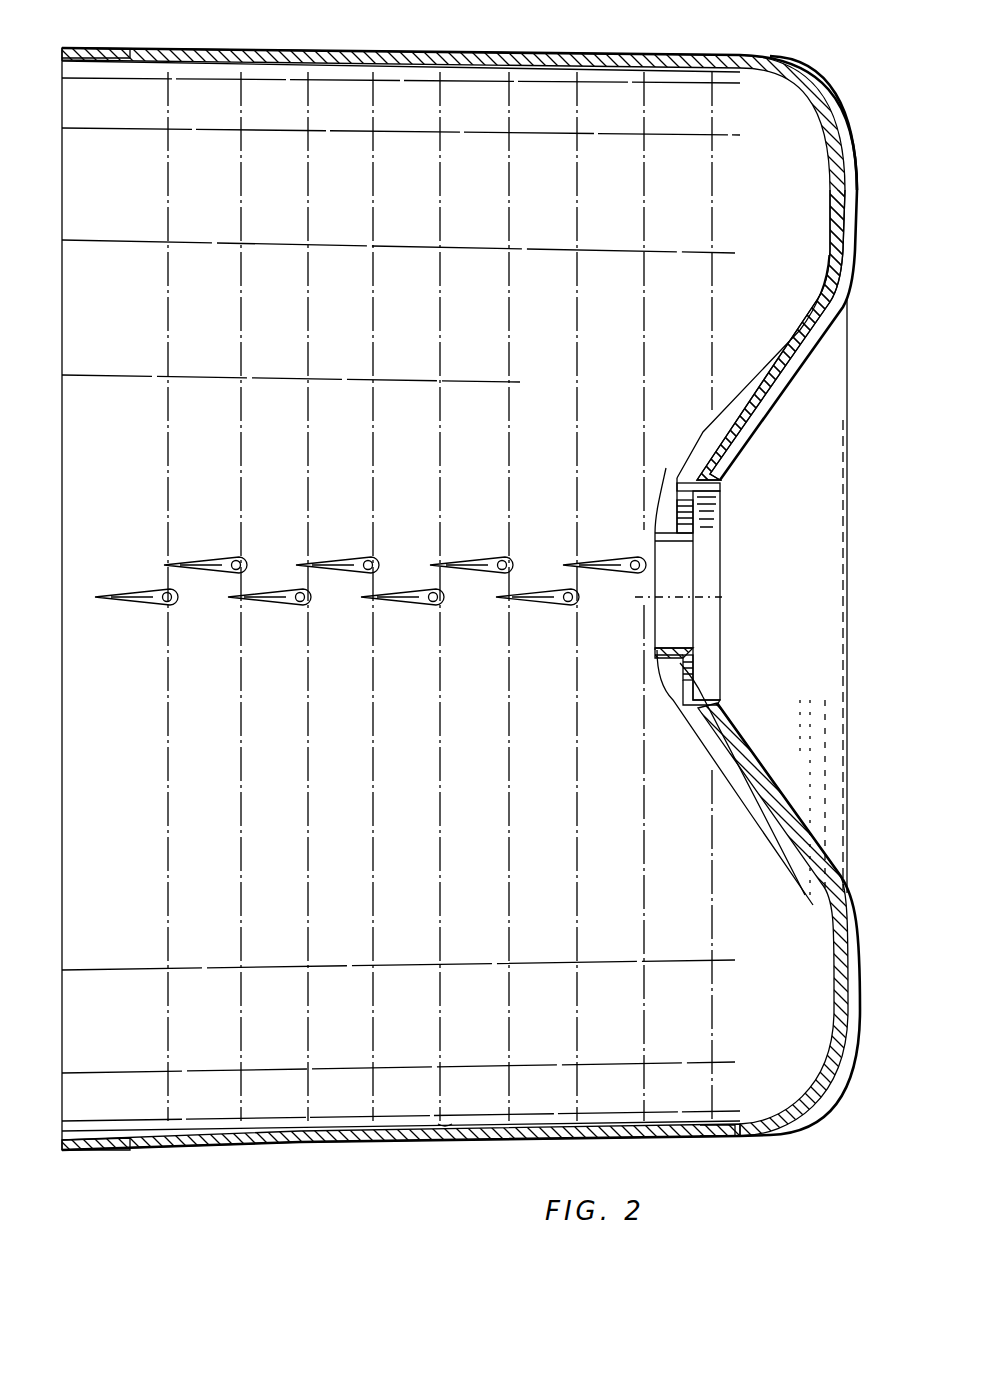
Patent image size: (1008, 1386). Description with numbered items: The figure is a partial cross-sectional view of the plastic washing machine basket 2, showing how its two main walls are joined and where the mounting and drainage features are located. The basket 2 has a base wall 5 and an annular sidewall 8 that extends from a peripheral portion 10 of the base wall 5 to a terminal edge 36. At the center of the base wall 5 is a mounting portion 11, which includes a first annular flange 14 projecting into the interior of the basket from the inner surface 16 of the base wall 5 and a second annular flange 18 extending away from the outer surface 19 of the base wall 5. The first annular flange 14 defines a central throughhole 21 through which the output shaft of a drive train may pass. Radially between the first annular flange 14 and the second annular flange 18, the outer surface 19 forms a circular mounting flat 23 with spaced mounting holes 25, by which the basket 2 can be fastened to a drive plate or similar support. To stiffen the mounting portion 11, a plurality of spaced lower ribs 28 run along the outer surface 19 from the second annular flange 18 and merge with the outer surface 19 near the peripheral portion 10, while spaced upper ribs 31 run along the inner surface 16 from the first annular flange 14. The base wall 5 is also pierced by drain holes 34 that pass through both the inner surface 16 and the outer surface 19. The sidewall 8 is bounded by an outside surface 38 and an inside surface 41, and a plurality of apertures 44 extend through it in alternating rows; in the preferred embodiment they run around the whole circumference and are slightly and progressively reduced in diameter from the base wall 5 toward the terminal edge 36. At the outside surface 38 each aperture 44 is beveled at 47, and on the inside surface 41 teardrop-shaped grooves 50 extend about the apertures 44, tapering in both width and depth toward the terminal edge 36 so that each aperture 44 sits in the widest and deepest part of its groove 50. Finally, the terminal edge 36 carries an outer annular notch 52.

The plastic washing machine basket 2 is at (856, 719).
The base wall 5 is at (848, 404).
The annular sidewall 8 is at (415, 48).
The peripheral portion 10 is at (836, 107).
The mounting portion 11 is at (728, 524).
The first annular flange 14 is at (668, 530).
The inner surface 16 is at (683, 656).
The second annular flange 18 is at (710, 690).
The outer surface 19 is at (722, 505).
The central throughhole 21 is at (662, 628).
The circular mounting flat 23 is at (697, 652).
The mounting holes 25 is at (682, 690).
The lower ribs 28 is at (775, 398).
The upper ribs 31 is at (704, 432).
The drain holes 34 is at (832, 945).
The terminal edge 36 is at (70, 1156).
The outside surface 38 is at (330, 1145).
The inside surface 41 is at (388, 1116).
The apertures 44 is at (445, 600).
The bevel 47 is at (717, 1141).
The teardrop-shaped grooves 50 is at (383, 60).
The outer annular notch 52 is at (66, 47).